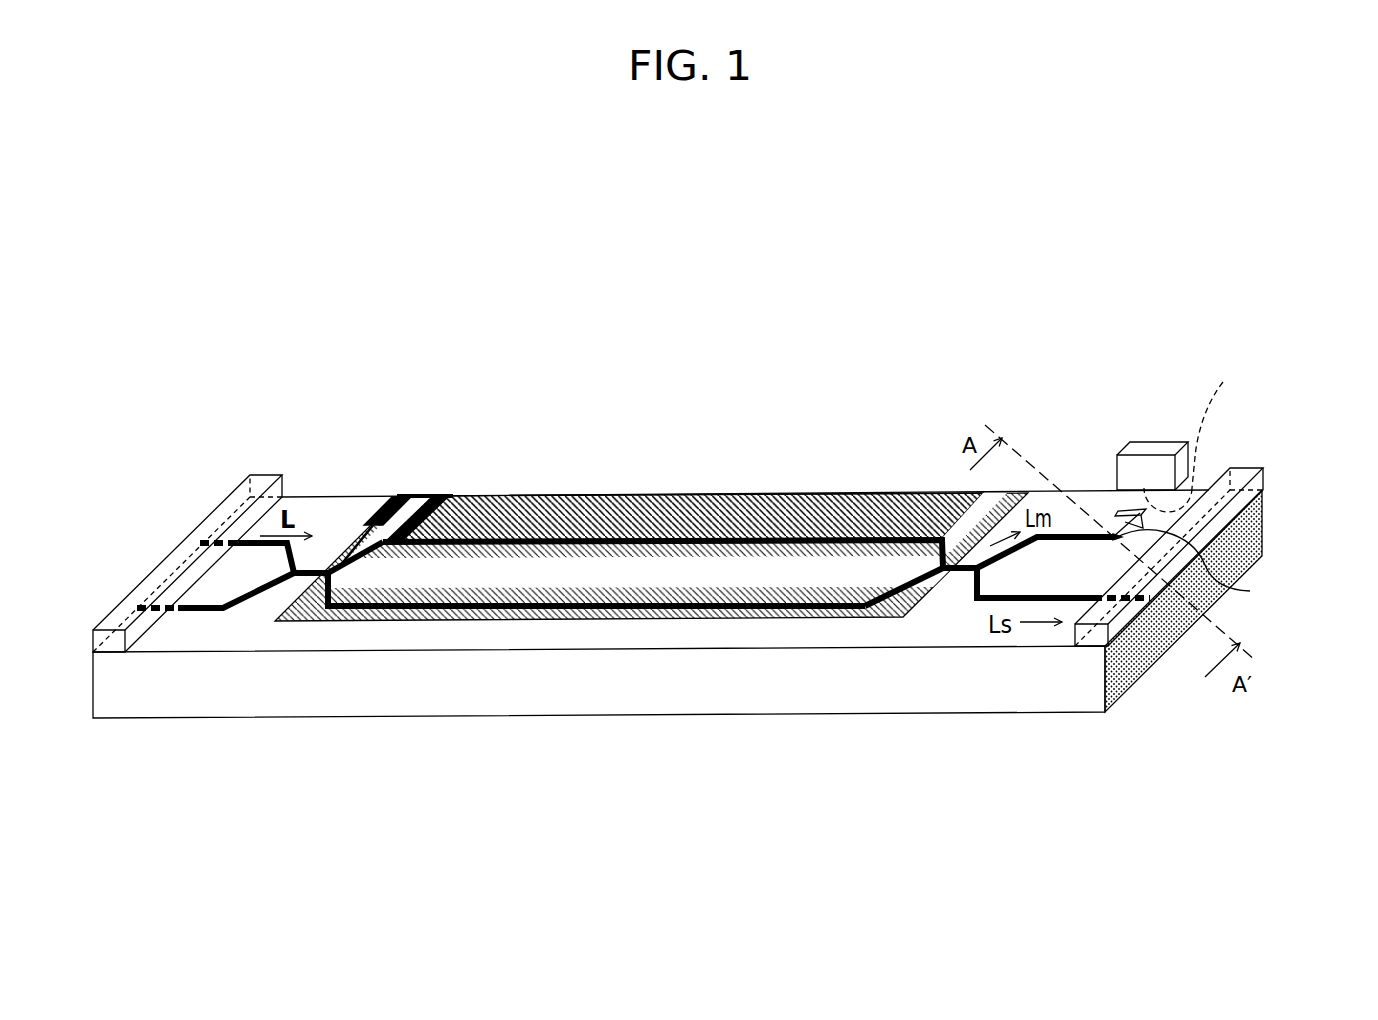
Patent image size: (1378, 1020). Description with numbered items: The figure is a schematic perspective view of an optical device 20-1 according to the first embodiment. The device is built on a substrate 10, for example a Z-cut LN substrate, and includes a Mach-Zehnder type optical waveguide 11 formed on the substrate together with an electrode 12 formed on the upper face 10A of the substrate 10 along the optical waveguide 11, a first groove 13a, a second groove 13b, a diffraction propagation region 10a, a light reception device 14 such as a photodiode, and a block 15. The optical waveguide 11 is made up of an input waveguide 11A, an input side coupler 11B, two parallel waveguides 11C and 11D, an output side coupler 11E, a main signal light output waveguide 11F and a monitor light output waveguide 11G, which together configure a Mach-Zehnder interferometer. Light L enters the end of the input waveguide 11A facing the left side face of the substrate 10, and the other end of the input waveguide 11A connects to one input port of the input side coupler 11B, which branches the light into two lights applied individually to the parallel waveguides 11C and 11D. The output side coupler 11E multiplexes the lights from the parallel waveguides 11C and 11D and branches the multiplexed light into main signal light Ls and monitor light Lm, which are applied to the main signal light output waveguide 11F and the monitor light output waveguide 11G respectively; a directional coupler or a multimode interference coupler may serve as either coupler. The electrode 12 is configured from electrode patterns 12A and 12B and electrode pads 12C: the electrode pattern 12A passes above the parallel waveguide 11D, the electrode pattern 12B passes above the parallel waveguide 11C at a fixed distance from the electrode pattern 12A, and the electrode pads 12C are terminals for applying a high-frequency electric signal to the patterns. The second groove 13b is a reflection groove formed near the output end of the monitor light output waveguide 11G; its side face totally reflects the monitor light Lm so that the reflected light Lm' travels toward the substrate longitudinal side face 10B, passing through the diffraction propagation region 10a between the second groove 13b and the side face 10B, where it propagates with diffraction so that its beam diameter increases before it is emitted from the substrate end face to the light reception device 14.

The substrate 10 is at (503, 717).
The upper face of the substrate 10A is at (473, 638).
The substrate longitudinal side face 10B is at (1267, 522).
The diffraction propagation region 10a is at (1230, 433).
The Mach-Zehnder type optical waveguide 11 is at (210, 618).
The input waveguide 11A is at (250, 539).
The input side coupler 11B is at (322, 573).
The parallel waveguide 11C is at (696, 535).
The parallel waveguide 11D is at (660, 618).
The output side coupler 11E is at (942, 588).
The main signal light output waveguide 11F is at (978, 603).
The monitor light output waveguide 11G is at (1068, 535).
The electrode 12 is at (508, 490).
The electrode pattern 12A is at (360, 494).
The electrode pattern 12B is at (602, 495).
The electrode pads 12C is at (443, 493).
The first groove 13a is at (1118, 513).
The second groove 13b is at (1250, 591).
The light reception device 14 is at (1157, 443).
The block 15 is at (253, 473).
The optical device 20-1 is at (653, 380).